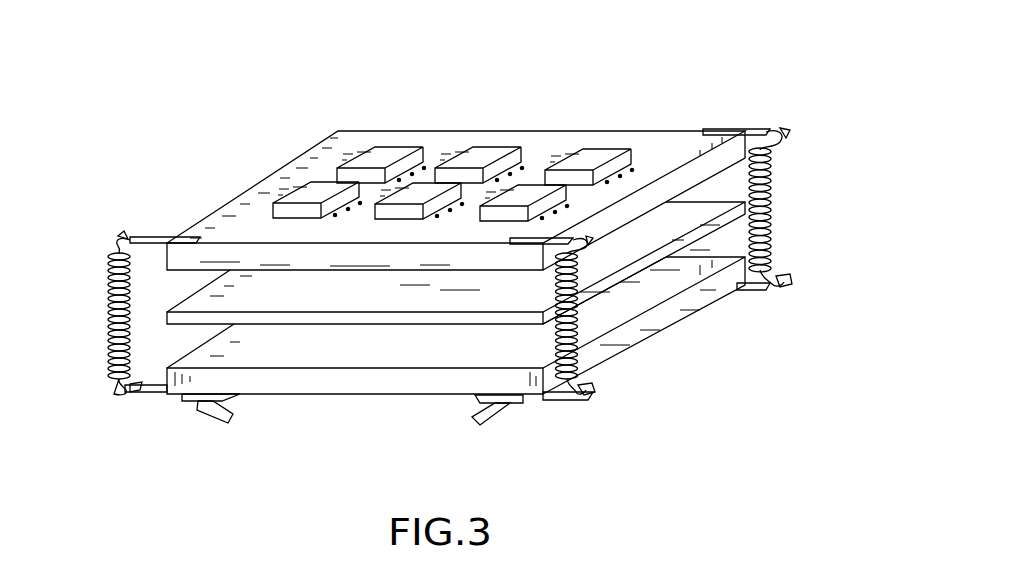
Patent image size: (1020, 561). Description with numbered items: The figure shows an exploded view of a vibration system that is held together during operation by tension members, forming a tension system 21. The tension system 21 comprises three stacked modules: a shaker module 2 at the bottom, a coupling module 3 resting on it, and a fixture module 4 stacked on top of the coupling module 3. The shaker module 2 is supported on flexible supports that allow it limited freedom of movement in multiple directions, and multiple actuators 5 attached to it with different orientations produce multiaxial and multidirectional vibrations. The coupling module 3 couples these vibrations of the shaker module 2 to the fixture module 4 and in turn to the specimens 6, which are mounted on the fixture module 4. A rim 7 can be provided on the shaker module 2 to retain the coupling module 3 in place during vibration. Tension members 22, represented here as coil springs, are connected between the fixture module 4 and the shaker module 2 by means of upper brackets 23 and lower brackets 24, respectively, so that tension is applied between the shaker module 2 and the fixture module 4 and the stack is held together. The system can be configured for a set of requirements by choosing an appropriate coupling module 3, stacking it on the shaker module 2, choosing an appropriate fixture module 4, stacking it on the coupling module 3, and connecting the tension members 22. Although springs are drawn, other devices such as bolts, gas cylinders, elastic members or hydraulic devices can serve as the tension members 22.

The shaker module 2 is at (373, 395).
The coupling module 3 is at (417, 300).
The fixture module 4 is at (541, 129).
The actuators 5 is at (488, 410).
The specimens 6 is at (636, 142).
The rim 7 is at (214, 350).
The tension system 21 is at (98, 143).
The tension members 22 is at (776, 212).
The upper brackets 23 is at (760, 129).
The lower brackets 24 is at (745, 290).